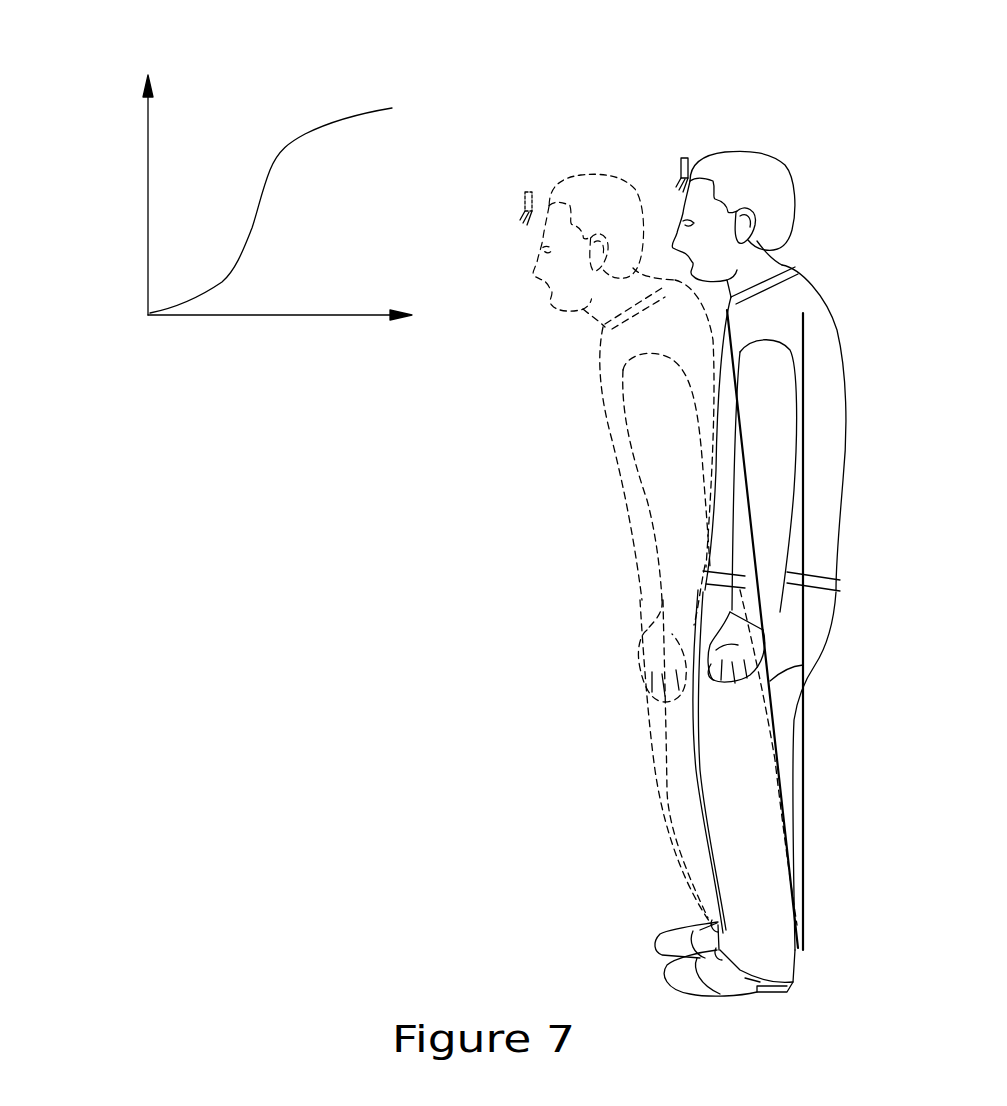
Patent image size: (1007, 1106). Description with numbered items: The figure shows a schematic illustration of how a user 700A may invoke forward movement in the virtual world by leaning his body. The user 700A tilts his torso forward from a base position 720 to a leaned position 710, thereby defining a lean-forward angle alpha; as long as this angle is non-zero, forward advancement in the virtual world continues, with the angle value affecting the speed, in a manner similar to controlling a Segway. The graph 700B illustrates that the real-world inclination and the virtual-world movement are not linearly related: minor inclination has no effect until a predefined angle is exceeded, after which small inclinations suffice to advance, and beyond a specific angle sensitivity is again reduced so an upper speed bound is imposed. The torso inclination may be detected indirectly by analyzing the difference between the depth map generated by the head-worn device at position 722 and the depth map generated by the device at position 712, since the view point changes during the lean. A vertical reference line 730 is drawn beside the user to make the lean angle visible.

The user 700A is at (762, 97).
The graph 700B is at (282, 36).
The position 710 is at (527, 192).
The device position 712 is at (527, 212).
The base position 720 is at (700, 155).
The device position 722 is at (680, 170).
The vertical reference line / lean angle 730 is at (803, 665).